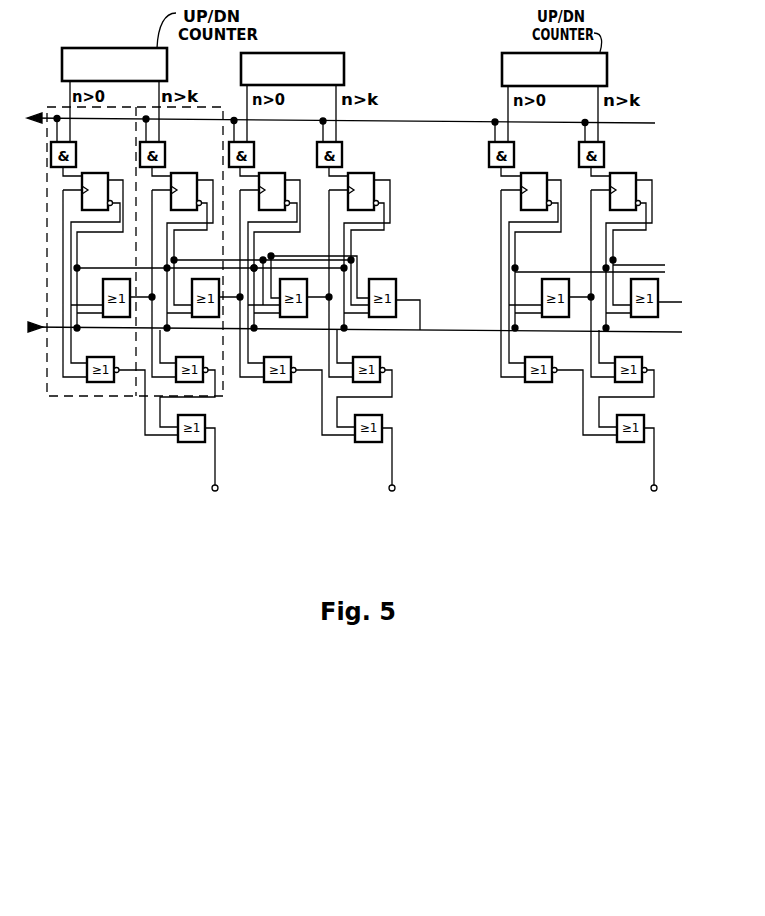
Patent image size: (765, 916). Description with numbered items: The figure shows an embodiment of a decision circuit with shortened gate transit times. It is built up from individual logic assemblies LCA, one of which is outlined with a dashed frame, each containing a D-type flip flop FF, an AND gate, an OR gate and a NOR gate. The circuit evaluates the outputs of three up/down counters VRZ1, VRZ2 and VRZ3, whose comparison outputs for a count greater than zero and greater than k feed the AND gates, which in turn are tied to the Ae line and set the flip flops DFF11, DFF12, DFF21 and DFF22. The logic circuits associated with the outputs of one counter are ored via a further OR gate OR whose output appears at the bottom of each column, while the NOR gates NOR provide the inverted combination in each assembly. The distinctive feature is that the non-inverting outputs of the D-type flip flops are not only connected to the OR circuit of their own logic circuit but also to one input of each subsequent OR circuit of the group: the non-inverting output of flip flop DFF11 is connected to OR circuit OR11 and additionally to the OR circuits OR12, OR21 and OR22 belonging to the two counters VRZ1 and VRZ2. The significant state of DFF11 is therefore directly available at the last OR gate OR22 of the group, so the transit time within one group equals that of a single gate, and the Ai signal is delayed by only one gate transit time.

The up/down counter VRZ1 is at (114, 64).
The up/down counter VRZ2 is at (292, 69).
The up/down counter VRZ3 is at (554, 69).
The D-type flip flop DFF11 is at (87, 154).
The D-type flip flop DFF12 is at (176, 154).
The D-type flip flop DFF21 is at (265, 154).
The D-type flip flop DFF22 is at (353, 154).
The D-type flip flop FF is at (612, 217).
The OR circuit OR11 is at (112, 314).
The OR circuit OR12 is at (201, 314).
The OR circuit OR21 is at (302, 314).
The OR circuit OR22 is at (391, 314).
The OR gate OR is at (630, 468).
The NOR gate NOR is at (615, 382).
The logic assembly LCA is at (135, 270).
The output signal Ae is at (338, 108).
The input signal Ai is at (352, 317).